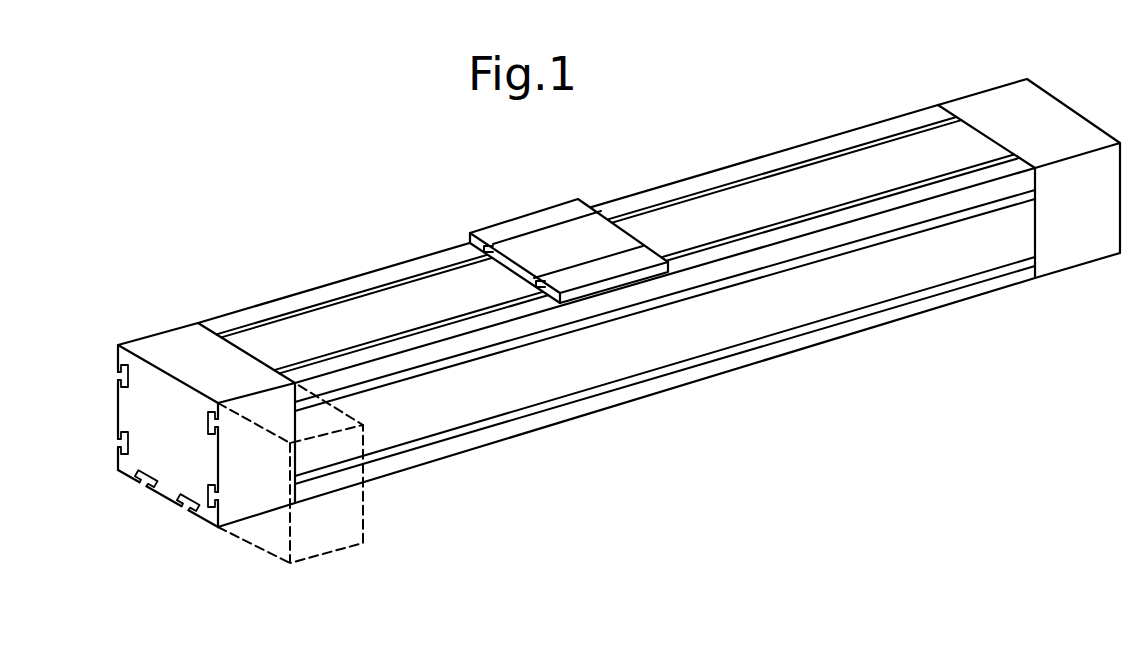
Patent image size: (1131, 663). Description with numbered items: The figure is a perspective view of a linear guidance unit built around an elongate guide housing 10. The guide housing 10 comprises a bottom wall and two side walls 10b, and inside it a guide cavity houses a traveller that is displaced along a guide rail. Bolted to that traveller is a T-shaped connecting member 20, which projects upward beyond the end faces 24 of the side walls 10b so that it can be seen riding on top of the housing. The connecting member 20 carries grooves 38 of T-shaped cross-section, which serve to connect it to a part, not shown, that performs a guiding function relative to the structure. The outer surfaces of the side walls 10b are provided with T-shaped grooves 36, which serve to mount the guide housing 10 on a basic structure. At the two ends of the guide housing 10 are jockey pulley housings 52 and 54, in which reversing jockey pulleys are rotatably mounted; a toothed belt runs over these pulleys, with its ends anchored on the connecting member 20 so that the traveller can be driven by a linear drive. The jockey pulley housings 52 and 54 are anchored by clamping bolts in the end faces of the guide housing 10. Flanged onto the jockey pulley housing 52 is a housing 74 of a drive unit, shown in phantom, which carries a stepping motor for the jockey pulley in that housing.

The guide housing 10 is at (660, 395).
The side walls 10b is at (750, 320).
The connecting member 20 is at (604, 233).
The end faces 24 is at (455, 252).
The T-shaped grooves 36 is at (848, 247).
The grooves 38 is at (552, 223).
The jockey pulley housing 52 is at (170, 345).
The jockey pulley housing 54 is at (987, 98).
The housing of a drive unit 74 is at (365, 515).